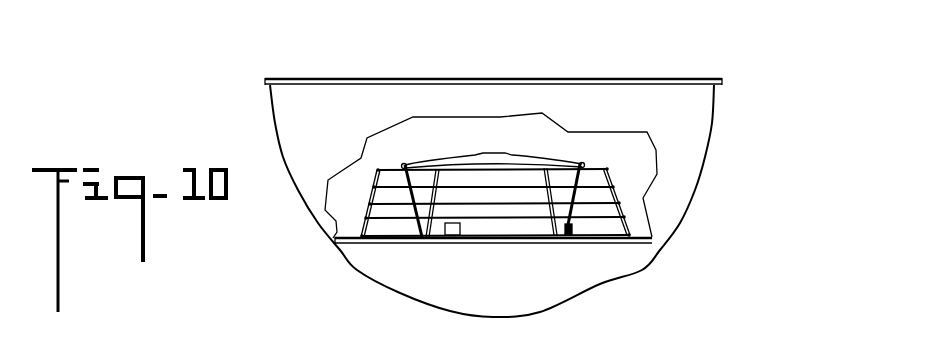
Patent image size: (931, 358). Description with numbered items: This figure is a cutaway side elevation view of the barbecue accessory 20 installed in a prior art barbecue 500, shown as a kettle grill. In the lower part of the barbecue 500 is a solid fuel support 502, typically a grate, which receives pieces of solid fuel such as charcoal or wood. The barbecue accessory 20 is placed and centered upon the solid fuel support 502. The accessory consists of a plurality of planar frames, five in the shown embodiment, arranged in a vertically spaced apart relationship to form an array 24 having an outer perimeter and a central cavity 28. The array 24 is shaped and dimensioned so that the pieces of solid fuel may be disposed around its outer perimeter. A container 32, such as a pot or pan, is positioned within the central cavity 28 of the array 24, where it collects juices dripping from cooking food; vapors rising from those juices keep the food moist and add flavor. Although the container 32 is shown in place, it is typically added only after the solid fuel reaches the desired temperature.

The barbecue 500 is at (758, 72).
The barbecue accessory 20 is at (600, 160).
The array 24 is at (367, 197).
The central cavity 28 is at (538, 0).
The container 32 is at (457, 168).
The solid fuel support 502 is at (468, 243).